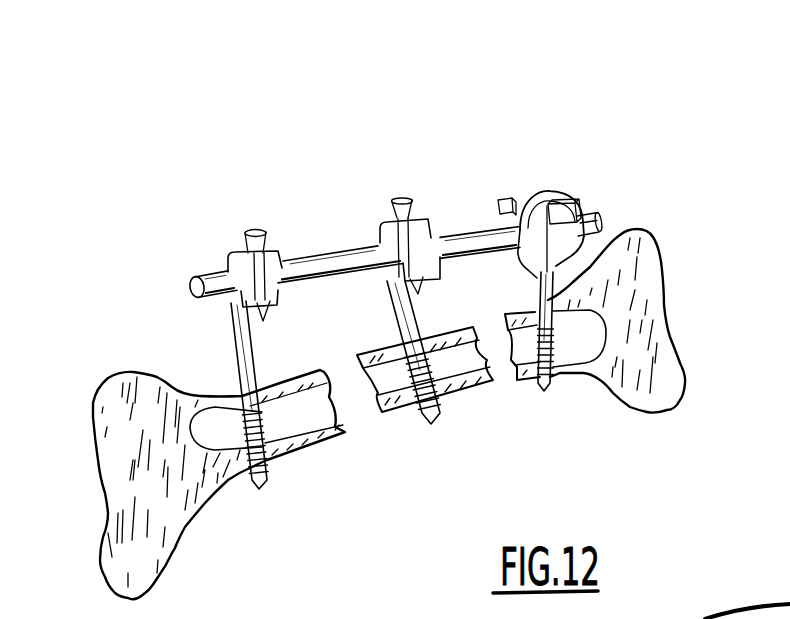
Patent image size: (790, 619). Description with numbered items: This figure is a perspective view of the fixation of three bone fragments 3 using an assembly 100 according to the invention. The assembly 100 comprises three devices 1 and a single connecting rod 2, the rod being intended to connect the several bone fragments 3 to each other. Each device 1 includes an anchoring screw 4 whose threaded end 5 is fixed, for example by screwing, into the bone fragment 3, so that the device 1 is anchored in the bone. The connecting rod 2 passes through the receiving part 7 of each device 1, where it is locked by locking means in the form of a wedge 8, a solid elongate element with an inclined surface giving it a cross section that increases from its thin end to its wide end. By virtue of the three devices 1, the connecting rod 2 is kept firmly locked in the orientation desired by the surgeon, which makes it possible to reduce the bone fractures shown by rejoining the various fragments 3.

The assembly 100 is at (286, 121).
The device 1 is at (201, 240).
The connecting rod 2 is at (190, 292).
The bone fragment 3 is at (165, 543).
The anchoring screw 4 is at (237, 362).
The threaded end 5 is at (541, 392).
The receiving part 7 is at (230, 265).
The wedge 8 is at (279, 228).